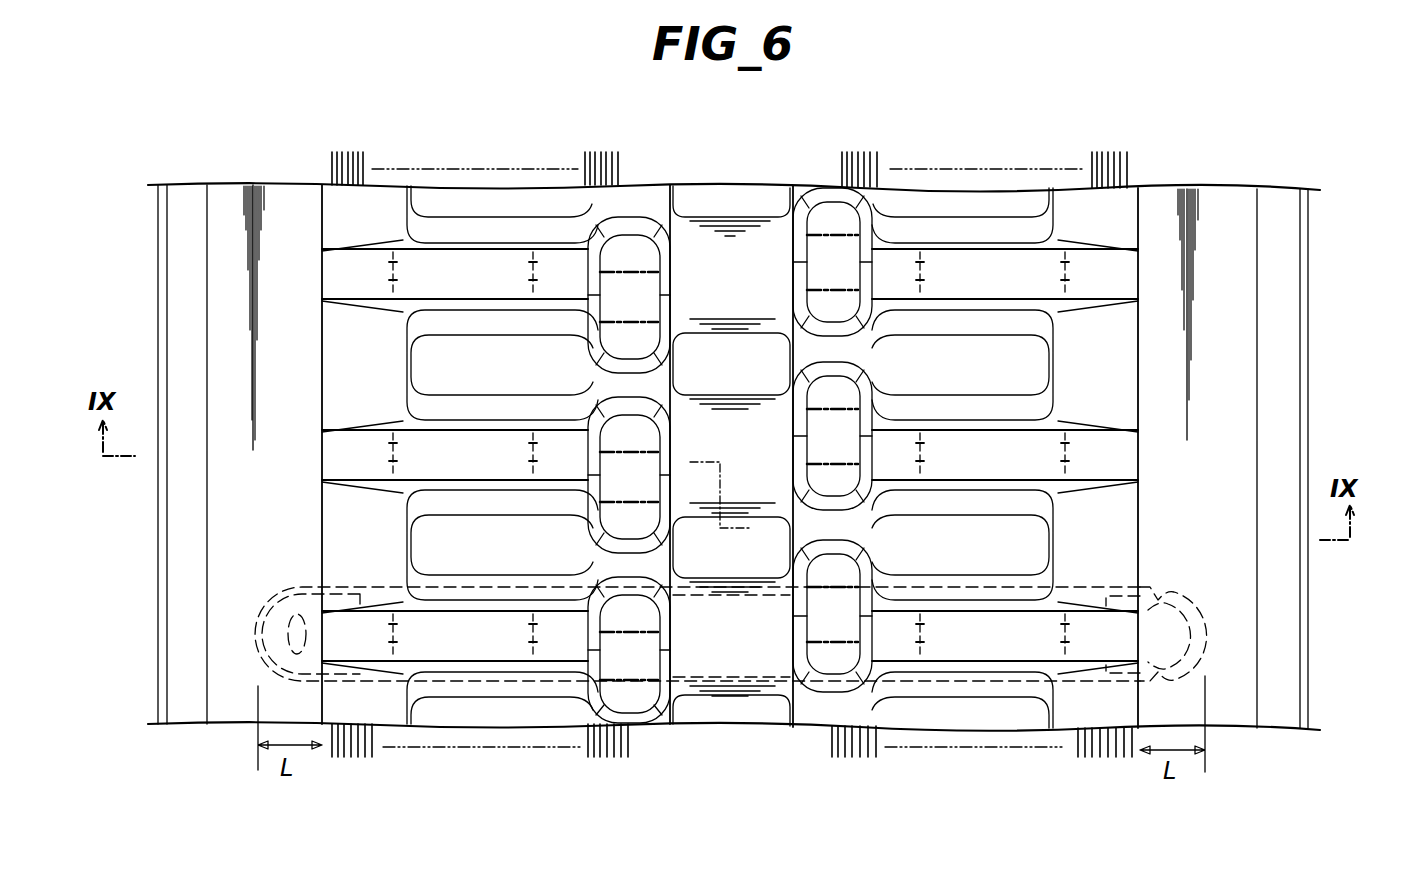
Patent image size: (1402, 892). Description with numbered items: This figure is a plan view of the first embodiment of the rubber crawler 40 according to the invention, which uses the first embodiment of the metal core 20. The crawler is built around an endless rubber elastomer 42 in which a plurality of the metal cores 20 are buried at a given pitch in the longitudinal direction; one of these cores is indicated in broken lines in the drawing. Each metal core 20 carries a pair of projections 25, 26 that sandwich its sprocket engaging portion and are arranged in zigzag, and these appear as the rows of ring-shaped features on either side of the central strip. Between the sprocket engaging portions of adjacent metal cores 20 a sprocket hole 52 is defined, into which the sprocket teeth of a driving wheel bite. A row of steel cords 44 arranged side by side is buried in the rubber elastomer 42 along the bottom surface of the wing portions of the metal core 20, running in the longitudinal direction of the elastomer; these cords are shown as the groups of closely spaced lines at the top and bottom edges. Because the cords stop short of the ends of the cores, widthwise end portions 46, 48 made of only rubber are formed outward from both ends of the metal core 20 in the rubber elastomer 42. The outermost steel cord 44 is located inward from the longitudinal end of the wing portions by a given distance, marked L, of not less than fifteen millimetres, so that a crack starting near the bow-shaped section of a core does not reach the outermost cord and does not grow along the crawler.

The rubber crawler 40 is at (1310, 386).
The rubber elastomer 42 is at (1087, 205).
The steel cords 44 is at (332, 173).
The widthwise end portion 46 is at (1258, 700).
The widthwise end portion 48 is at (229, 690).
The sprocket hole 52 is at (727, 355).
The projection 26 is at (632, 668).
The projection 25 is at (830, 658).
The metal core 20 is at (966, 690).